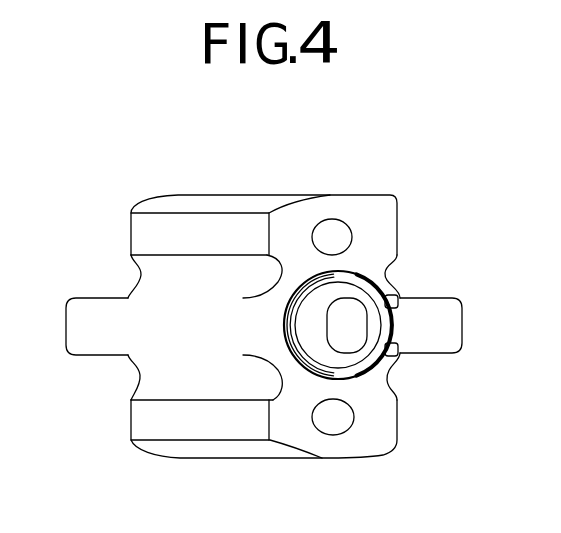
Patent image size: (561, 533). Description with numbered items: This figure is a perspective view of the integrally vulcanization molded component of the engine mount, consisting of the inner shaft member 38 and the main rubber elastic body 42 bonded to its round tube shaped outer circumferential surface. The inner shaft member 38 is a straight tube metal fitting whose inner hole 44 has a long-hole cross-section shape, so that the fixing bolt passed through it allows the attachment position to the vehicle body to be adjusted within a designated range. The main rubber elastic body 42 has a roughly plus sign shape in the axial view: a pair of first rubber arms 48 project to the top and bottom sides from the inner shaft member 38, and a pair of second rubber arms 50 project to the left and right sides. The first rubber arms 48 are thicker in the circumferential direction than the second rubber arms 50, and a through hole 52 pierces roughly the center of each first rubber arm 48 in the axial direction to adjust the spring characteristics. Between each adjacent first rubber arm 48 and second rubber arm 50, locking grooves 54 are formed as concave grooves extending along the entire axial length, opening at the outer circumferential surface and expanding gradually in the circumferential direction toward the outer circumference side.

The inner shaft member 38 is at (315, 312).
The main rubber elastic body 42 is at (458, 288).
The inner hole 44 is at (337, 350).
The first rubber arms 48 is at (370, 213).
The second rubber arms 50 is at (93, 329).
The through hole 52 is at (331, 242).
The locking grooves 54 is at (138, 266).